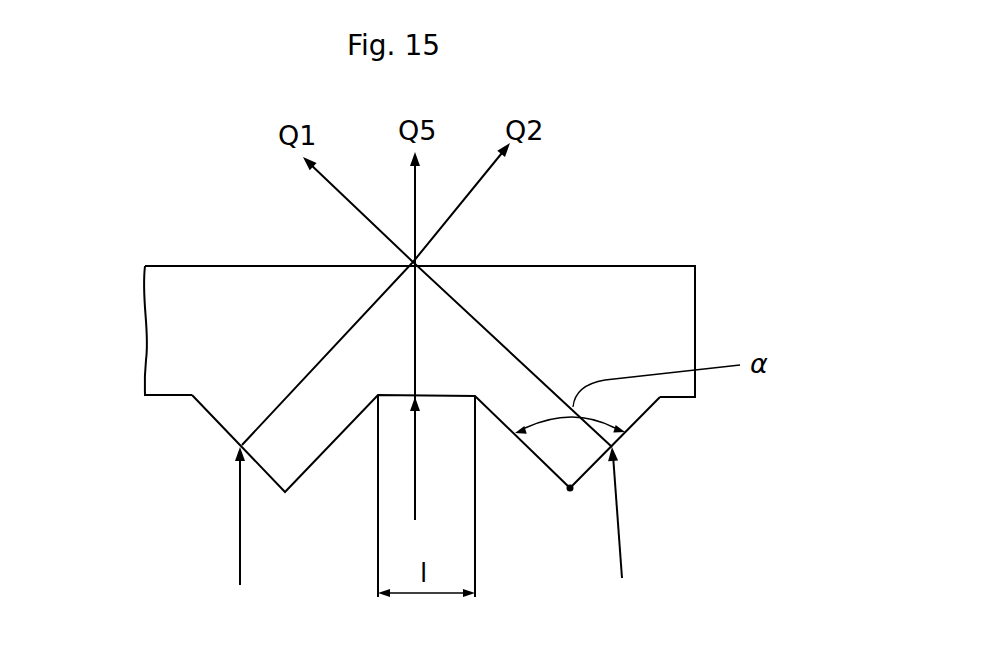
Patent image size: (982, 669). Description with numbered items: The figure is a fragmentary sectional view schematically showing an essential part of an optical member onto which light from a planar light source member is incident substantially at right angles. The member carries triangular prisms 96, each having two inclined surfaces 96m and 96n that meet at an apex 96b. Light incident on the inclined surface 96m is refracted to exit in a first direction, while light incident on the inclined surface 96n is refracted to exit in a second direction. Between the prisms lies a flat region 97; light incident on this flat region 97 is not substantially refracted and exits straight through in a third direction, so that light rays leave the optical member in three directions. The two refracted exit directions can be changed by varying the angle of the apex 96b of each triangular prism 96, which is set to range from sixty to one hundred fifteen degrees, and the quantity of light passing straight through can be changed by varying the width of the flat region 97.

The triangular prism 96 is at (568, 444).
The inclined surface 96n is at (223, 427).
The inclined surface 96m is at (316, 458).
The apex 96b is at (570, 492).
The flat region 97 is at (441, 395).